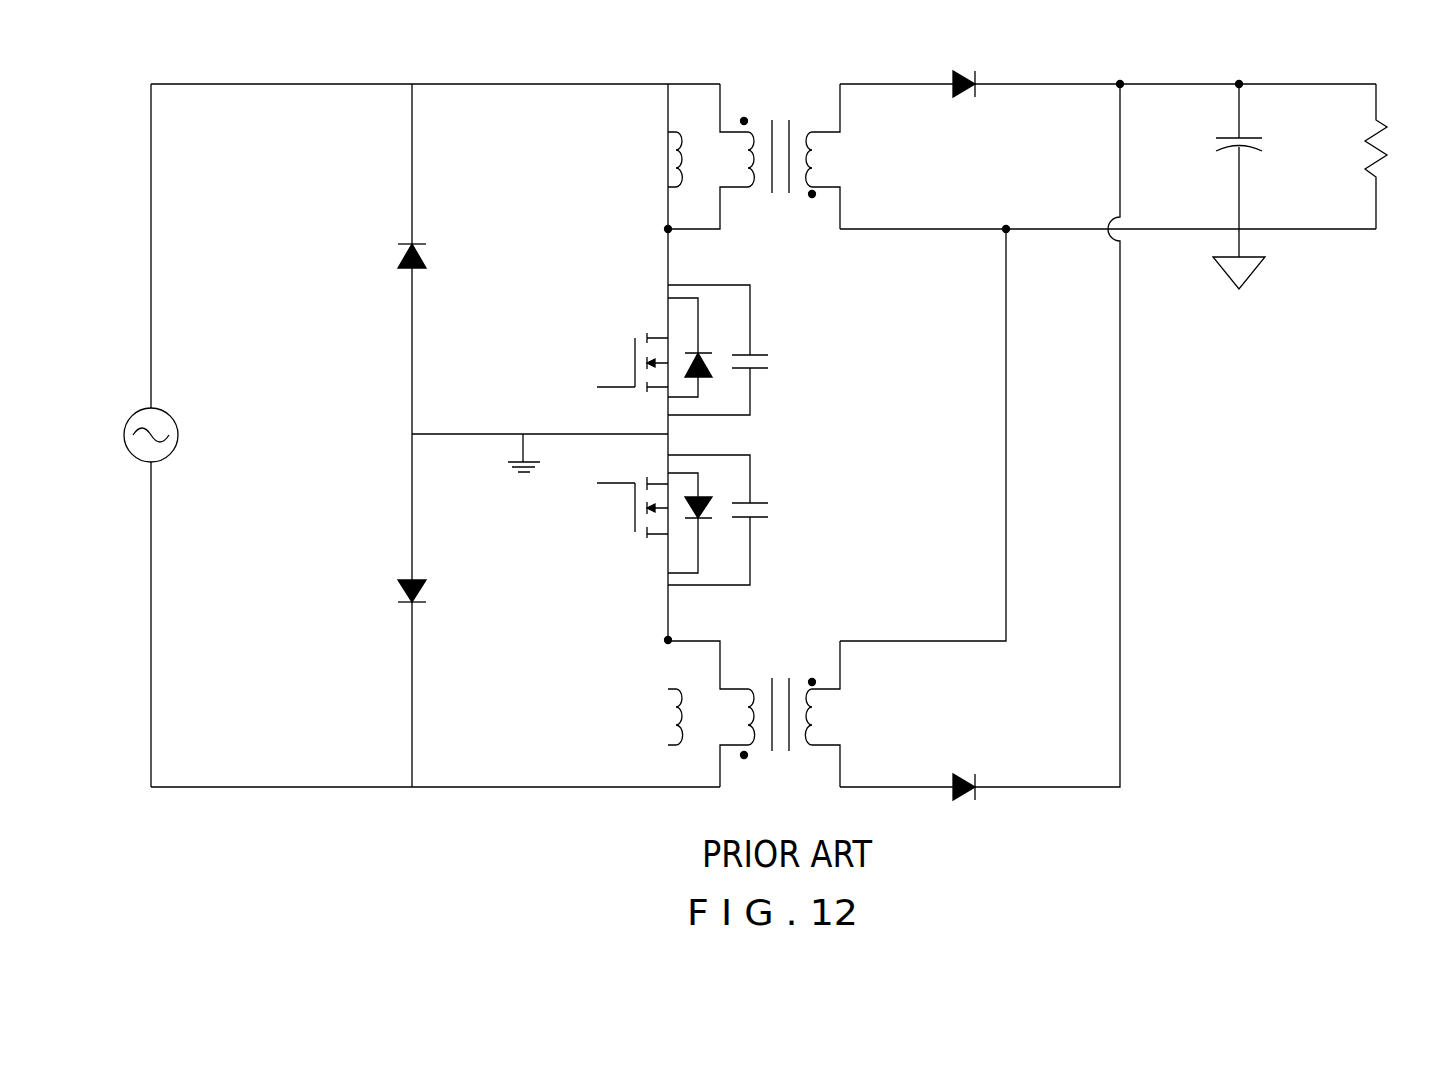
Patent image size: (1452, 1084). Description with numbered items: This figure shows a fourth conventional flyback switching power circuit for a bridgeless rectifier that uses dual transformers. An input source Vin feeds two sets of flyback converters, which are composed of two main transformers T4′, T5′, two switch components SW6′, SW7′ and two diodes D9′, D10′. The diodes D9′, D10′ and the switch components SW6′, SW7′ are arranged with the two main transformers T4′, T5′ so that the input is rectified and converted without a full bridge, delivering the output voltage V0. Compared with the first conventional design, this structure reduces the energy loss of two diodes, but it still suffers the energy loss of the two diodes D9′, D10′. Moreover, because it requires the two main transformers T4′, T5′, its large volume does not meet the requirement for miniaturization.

The input voltage source Vin is at (129, 435).
The diode D9′ is at (427, 256).
The diode D10′ is at (430, 592).
The switch component SW6′ is at (675, 350).
The switch component SW7′ is at (675, 520).
The main transformer T4′ is at (763, 154).
The main transformer T5′ is at (763, 712).
The output voltage V0 is at (1393, 156).